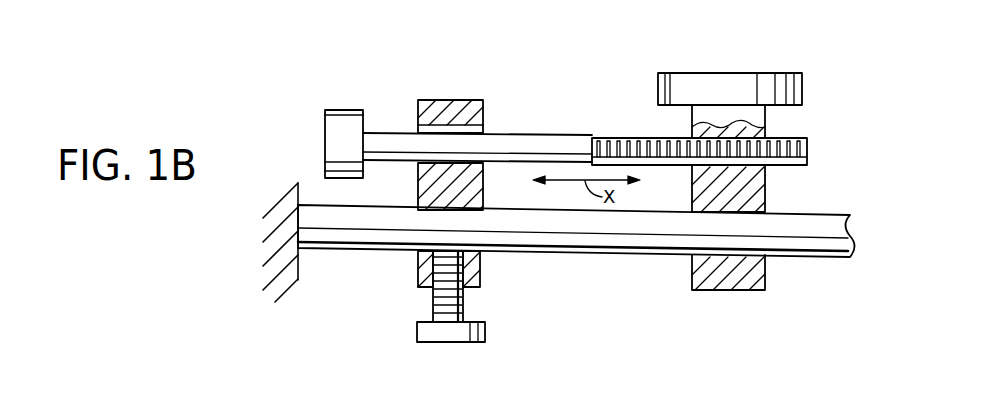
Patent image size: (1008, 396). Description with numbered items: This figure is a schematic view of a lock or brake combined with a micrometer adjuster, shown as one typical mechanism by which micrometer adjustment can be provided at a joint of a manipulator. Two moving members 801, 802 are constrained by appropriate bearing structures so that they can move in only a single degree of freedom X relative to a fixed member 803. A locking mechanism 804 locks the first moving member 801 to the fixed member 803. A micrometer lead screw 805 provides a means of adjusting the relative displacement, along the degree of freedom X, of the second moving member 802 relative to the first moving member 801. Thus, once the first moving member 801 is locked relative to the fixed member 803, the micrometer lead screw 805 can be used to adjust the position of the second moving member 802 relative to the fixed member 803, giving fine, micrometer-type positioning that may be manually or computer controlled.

The moving member 801 is at (462, 100).
The moving member 802 is at (790, 73).
The fixed member 803 is at (595, 253).
The locking mechanism 804 is at (418, 332).
The micrometer lead screw 805 is at (571, 124).